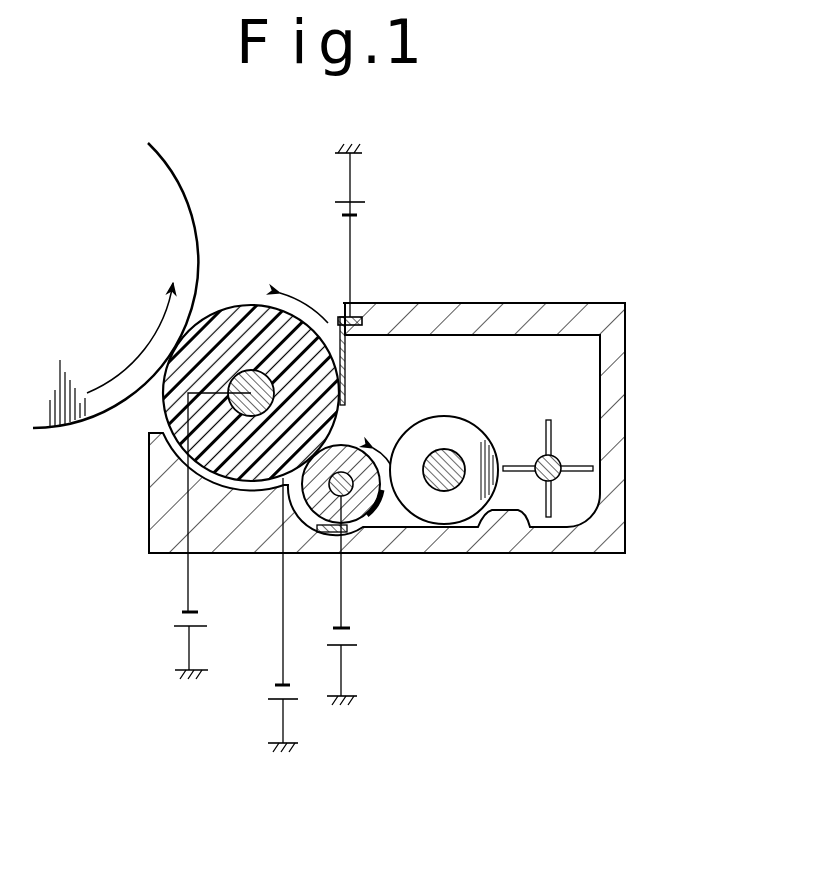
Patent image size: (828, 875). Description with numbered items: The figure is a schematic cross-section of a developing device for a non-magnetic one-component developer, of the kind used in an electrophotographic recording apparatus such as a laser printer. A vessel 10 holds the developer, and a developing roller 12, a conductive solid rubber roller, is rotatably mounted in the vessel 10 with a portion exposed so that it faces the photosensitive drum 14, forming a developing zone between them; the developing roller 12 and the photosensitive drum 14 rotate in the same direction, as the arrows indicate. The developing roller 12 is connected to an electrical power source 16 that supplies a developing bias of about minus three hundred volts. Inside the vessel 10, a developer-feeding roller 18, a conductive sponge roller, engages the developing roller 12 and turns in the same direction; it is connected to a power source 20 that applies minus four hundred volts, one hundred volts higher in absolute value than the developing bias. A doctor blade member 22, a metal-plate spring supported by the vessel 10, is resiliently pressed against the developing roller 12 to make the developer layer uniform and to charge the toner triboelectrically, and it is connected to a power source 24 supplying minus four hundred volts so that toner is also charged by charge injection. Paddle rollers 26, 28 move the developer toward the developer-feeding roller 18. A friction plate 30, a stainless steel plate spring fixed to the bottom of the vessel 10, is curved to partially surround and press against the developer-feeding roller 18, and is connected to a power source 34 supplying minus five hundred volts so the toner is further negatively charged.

The vessel 10 is at (630, 473).
The developing roller 12 is at (252, 304).
The photosensitive drum 14 is at (188, 194).
The electrical power source 16 is at (173, 618).
The developer-feeding roller 18 is at (353, 444).
The electrical power source 20 is at (268, 692).
The doctor blade member 22 is at (350, 357).
The electrical power source 24 is at (362, 207).
The paddle roller 26 is at (477, 390).
The paddle roller 28 is at (550, 433).
The friction plate 30 is at (388, 515).
The electrical power source 34 is at (357, 637).